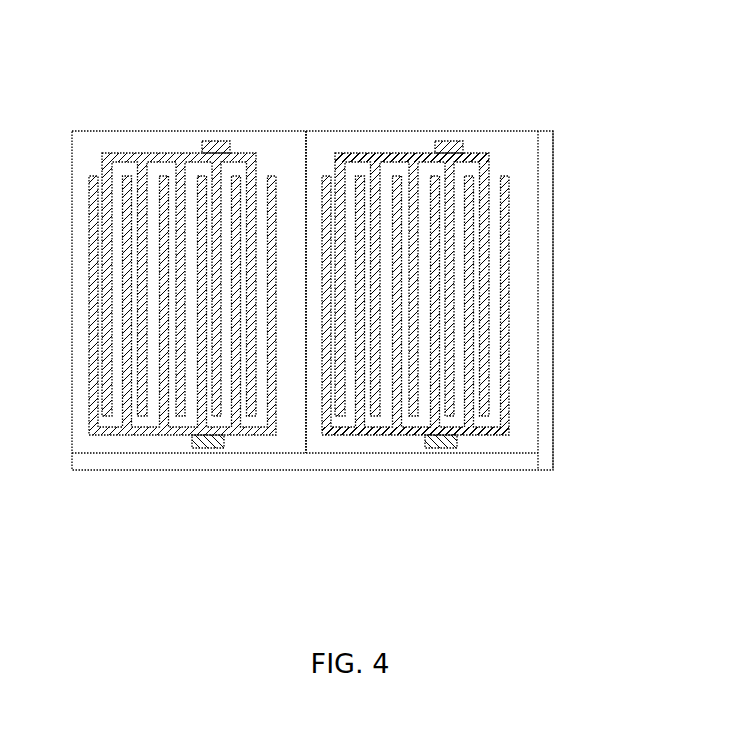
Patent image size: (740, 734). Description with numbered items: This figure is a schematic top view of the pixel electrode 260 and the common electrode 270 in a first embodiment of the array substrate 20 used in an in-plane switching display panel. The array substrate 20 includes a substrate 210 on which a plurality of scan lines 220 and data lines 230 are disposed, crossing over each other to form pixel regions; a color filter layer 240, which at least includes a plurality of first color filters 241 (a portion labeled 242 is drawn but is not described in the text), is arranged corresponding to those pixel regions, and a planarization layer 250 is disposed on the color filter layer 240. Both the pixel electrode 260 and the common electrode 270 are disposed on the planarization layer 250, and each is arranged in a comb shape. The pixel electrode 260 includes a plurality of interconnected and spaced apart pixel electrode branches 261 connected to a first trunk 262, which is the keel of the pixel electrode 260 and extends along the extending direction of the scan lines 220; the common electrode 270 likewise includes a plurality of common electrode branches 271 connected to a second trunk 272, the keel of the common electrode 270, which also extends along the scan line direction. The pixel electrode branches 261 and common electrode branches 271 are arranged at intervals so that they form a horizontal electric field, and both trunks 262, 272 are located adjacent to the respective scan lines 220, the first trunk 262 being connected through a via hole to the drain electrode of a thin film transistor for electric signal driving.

The array substrate 20 is at (97, 42).
The substrate 210 is at (525, 357).
The scan line 220 is at (532, 460).
The data line 230 is at (545, 412).
The color filter layer 240 is at (282, 76).
The first color filter 241 is at (332, 142).
The second side of partition 242 is at (280, 140).
The planarization layer 250 is at (525, 146).
The pixel electrode 260 is at (242, 522).
The pixel electrode branch 261 is at (275, 398).
The first trunk 262 is at (258, 436).
The common electrode 270 is at (192, 84).
The common electrode branch 271 is at (138, 175).
The second trunk 272 is at (188, 157).